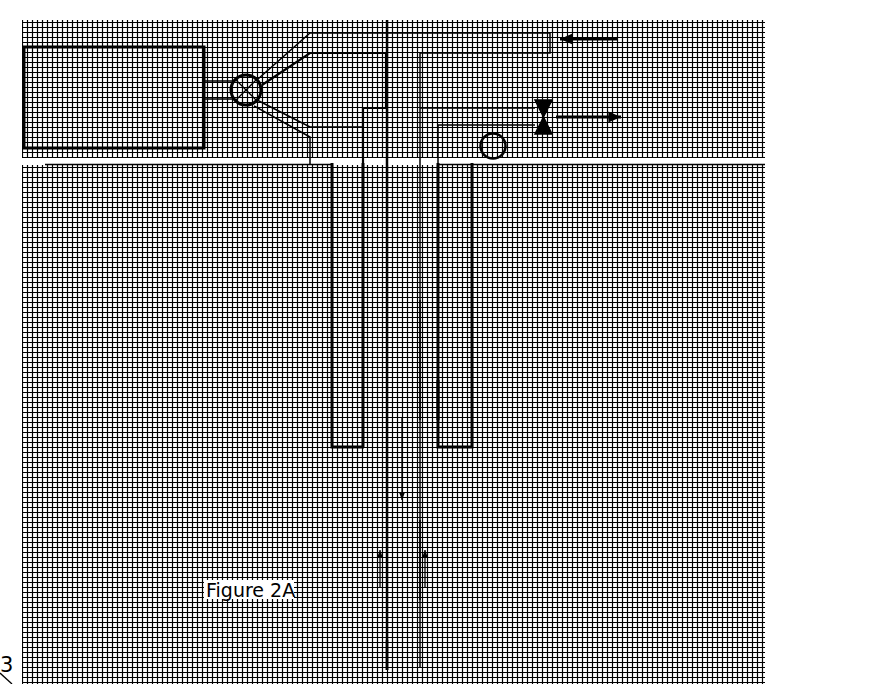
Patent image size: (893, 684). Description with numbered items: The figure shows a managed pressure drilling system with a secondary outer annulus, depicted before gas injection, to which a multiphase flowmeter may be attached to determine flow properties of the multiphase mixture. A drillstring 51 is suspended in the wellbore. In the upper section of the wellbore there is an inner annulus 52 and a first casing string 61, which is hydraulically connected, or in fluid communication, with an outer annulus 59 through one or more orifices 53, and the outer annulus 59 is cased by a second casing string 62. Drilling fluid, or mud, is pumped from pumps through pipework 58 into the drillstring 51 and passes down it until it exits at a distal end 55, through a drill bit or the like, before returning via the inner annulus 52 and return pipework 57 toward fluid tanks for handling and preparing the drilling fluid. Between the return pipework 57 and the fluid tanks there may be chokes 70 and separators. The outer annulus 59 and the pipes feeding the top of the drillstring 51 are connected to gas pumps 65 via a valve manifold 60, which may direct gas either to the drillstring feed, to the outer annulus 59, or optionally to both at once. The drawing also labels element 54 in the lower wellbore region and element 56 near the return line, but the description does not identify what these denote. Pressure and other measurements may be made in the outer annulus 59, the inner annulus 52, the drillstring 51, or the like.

The drillstring 51 is at (423, 288).
The inner annulus 52 is at (424, 363).
The orifices 53 is at (441, 394).
The annulus 54 is at (427, 539).
The distal end 55 is at (397, 668).
The pump 56 is at (506, 147).
The return pipework 57 is at (505, 116).
The pipework 58 is at (503, 42).
The outer annulus 59 is at (458, 240).
The valve manifold 60 is at (243, 73).
The first casing string 61 is at (360, 278).
The second casing string 62 is at (329, 363).
The gas pumps 65 is at (141, 120).
The chokes 70 is at (550, 101).